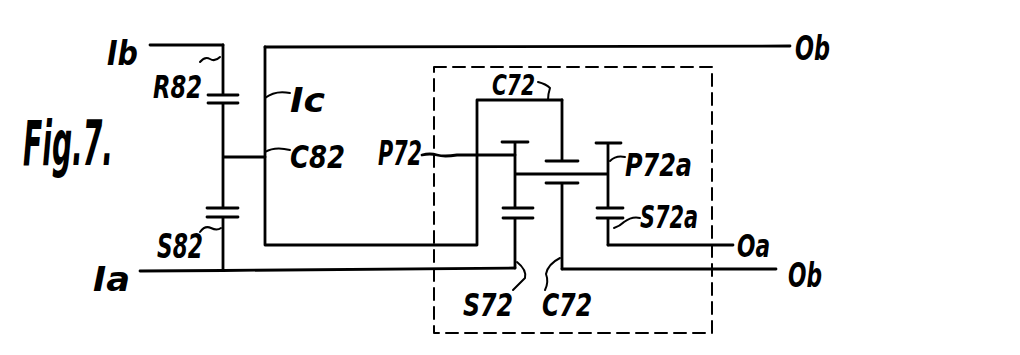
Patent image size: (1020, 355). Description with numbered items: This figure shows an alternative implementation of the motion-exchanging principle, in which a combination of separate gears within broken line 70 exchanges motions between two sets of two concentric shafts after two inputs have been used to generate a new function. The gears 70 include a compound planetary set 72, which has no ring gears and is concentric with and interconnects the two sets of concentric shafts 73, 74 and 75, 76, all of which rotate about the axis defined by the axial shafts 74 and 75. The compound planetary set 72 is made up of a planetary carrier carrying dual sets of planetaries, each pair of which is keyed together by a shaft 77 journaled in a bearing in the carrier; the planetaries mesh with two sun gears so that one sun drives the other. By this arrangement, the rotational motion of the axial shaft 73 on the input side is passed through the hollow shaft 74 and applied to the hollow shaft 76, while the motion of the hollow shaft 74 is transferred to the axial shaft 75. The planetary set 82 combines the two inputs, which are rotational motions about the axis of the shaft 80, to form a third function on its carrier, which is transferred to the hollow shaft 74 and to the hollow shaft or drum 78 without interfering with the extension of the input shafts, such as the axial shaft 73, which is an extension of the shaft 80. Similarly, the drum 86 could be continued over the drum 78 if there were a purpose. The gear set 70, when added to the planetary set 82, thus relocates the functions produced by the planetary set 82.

The gear set 70 is at (713, 158).
The compound planetary set 72 is at (585, 127).
The axial shaft 73 is at (322, 270).
The hollow shaft 74 is at (320, 245).
The axial shaft 75 is at (690, 272).
The hollow shaft 76 is at (680, 247).
The shaft 77 is at (531, 165).
The hollow shaft or drum 78 is at (388, 47).
The shaft 80 is at (160, 273).
The planetary set 82 is at (206, 158).
The drum 86 is at (178, 45).